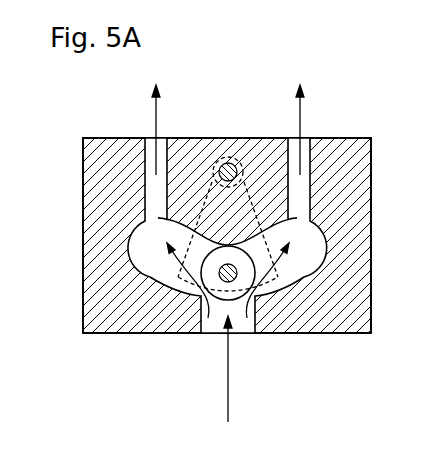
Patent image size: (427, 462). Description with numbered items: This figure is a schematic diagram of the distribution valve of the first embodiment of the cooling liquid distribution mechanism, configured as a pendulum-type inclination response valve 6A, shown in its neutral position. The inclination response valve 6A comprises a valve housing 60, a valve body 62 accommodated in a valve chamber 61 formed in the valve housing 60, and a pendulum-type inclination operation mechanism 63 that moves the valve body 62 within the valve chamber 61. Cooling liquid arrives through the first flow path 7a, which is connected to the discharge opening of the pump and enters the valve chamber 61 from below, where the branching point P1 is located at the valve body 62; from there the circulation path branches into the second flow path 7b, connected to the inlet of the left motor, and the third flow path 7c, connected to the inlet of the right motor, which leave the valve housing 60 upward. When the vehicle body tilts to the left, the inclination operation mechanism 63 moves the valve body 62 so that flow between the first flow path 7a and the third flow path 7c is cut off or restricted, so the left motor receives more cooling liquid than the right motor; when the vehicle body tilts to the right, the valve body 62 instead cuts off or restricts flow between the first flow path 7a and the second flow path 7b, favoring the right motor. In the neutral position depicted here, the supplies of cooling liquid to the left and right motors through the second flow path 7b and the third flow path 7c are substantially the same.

The pendulum-type inclination response valve 6A is at (213, 276).
The valve housing 60 is at (153, 333).
The valve chamber 61 is at (145, 248).
The valve body 62 is at (222, 294).
The pendulum-type inclination operation mechanism 63 is at (205, 168).
The branching point P1 is at (241, 270).
The first flow path 7a is at (229, 370).
The second flow path 7b is at (303, 110).
The third flow path 7c is at (153, 117).